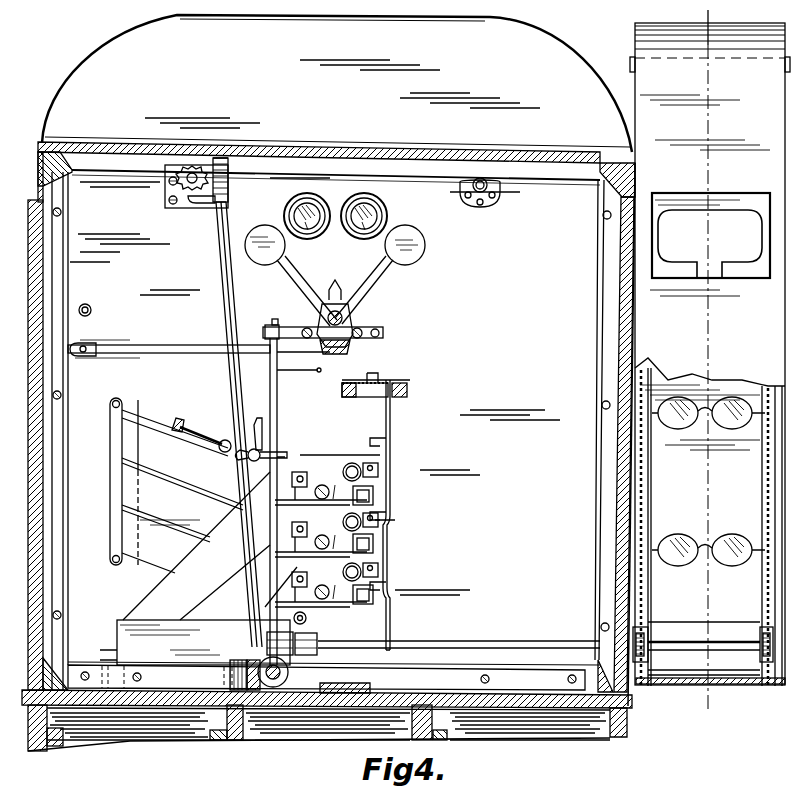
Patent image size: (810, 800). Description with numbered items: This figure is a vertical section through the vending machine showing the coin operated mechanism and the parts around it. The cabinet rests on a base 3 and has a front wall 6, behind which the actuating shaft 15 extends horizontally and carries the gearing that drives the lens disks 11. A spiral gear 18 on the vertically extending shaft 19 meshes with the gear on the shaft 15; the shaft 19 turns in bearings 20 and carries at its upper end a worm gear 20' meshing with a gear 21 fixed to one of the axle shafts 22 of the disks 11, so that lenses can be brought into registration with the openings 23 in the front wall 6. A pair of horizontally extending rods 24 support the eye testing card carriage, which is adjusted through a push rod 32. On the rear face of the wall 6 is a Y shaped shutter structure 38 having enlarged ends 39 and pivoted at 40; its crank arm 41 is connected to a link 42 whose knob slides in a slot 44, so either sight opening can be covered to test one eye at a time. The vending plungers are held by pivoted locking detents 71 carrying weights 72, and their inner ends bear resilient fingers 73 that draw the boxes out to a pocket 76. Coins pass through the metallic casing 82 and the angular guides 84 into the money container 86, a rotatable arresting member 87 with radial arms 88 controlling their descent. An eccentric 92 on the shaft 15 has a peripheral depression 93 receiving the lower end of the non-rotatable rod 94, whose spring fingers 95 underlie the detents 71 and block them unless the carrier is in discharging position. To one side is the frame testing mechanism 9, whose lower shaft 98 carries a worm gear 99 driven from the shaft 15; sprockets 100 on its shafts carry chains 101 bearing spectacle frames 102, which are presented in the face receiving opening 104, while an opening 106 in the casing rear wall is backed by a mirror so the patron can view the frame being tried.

The base 3 is at (545, 708).
The front wall 6 is at (328, 361).
The frame testing mechanism 9 is at (710, 361).
The disks 11 is at (129, 484).
The actuating shaft 15 is at (300, 668).
The gear 18 is at (240, 655).
The vertically extending shaft 19 is at (222, 260).
The bearings 20 is at (240, 181).
The worm gear 20' is at (251, 139).
The gear 21 is at (185, 185).
The axle shafts 22 is at (196, 172).
The openings 23 is at (350, 212).
The horizontally extending rods 24 is at (316, 300).
The push rod 32 is at (90, 305).
The shutter structure 38 is at (380, 290).
The enlarged ends 39 is at (412, 262).
The pivot 40 is at (358, 338).
The crank arm 41 is at (343, 345).
The link 42 is at (188, 343).
The slot 44 is at (92, 345).
The locking detent 71 is at (328, 528).
The weight 72 is at (398, 555).
The resilient fingers 73 is at (412, 570).
The pocket 76 is at (292, 740).
The metallic casing 82 is at (182, 491).
The angular guides 84 is at (160, 592).
The money container 86 is at (112, 742).
The arresting member 87 is at (258, 452).
The radial arms 88 is at (259, 422).
The eccentric 92 is at (228, 742).
The peripheral depression 93 is at (300, 648).
The rod 94 is at (282, 400).
The spring fingers 95 is at (300, 600).
The lower shaft 98 is at (500, 640).
The worm gear 99 is at (306, 618).
The sprockets 100 is at (758, 637).
The chains 101 is at (775, 476).
The spectacle frames 102 is at (700, 560).
The face receiving opening 104 is at (743, 243).
The opening 106 is at (763, 172).